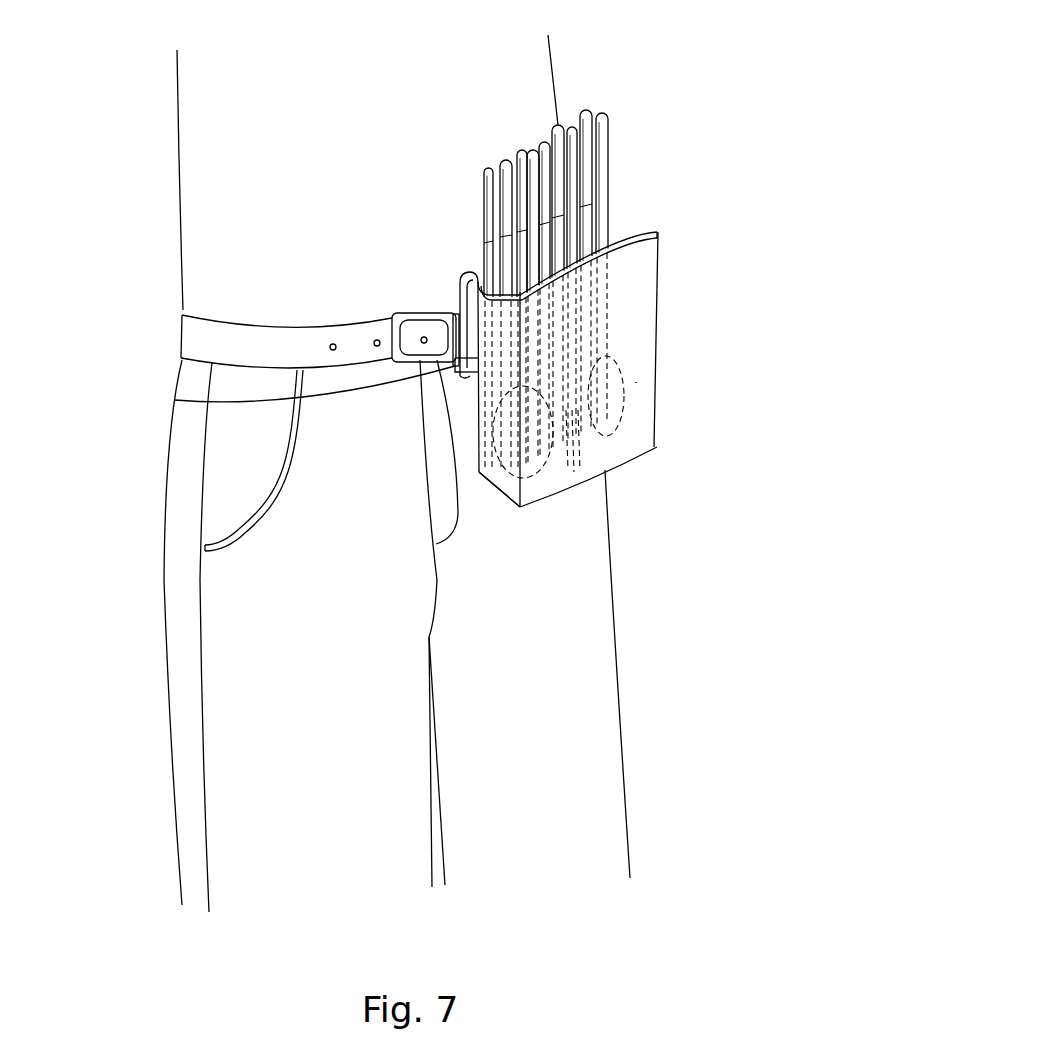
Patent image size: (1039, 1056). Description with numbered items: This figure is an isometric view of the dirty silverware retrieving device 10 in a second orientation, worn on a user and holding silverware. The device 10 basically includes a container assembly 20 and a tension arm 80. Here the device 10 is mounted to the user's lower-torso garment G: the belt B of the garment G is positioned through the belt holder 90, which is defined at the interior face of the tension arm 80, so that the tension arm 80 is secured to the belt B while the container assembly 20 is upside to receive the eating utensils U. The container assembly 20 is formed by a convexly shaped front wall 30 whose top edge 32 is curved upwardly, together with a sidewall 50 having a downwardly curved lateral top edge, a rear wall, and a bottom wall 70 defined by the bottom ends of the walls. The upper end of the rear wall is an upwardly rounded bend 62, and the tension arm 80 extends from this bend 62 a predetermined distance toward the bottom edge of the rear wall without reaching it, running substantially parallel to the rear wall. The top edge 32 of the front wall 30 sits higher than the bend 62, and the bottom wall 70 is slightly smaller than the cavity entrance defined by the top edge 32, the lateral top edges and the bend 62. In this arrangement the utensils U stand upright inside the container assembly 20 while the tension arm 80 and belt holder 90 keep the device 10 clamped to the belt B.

The dirty silverware retrieving device 10 is at (558, 340).
The container assembly 20 is at (657, 325).
The front wall 30 is at (636, 381).
The top edge 32 is at (617, 227).
The sidewall 50 is at (500, 482).
The bend 62 is at (472, 268).
The bottom wall 70 is at (618, 473).
The tension arm 80 is at (455, 292).
The belt holder 90 is at (192, 400).
The belt B is at (180, 333).
The lower-torso garment G is at (165, 469).
The eating utensils U is at (608, 107).